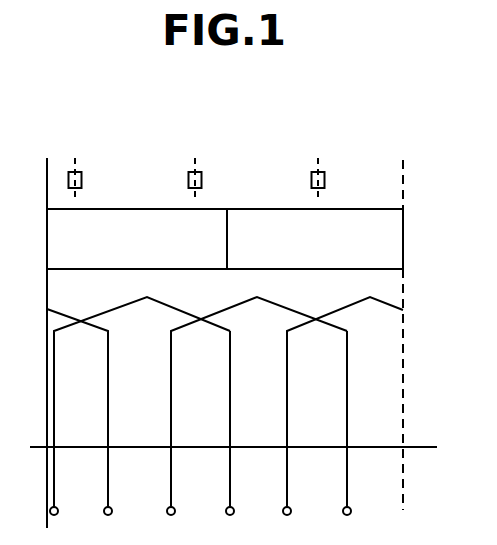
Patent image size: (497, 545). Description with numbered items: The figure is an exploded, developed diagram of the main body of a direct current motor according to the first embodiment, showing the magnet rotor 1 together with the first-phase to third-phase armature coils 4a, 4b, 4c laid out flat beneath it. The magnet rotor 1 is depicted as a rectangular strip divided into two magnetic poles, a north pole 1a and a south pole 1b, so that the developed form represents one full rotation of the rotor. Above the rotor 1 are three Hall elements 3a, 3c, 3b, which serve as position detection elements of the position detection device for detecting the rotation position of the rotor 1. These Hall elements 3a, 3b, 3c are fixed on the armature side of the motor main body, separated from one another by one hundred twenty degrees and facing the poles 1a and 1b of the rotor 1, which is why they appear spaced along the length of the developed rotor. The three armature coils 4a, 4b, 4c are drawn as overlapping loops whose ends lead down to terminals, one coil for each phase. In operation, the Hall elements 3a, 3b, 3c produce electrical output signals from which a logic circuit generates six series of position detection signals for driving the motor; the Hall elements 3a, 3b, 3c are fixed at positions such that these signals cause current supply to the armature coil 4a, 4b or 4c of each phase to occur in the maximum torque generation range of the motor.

The magnet rotor 1 is at (403, 255).
The pole of the rotor 1a is at (167, 210).
The pole of the rotor 1b is at (287, 210).
The Hall element 3a is at (82, 181).
The Hall element 3b is at (324, 181).
The Hall element 3c is at (201, 181).
The first-phase armature coil 4a is at (108, 355).
The second-phase armature coil 4b is at (230, 355).
The third-phase armature coil 4c is at (347, 355).